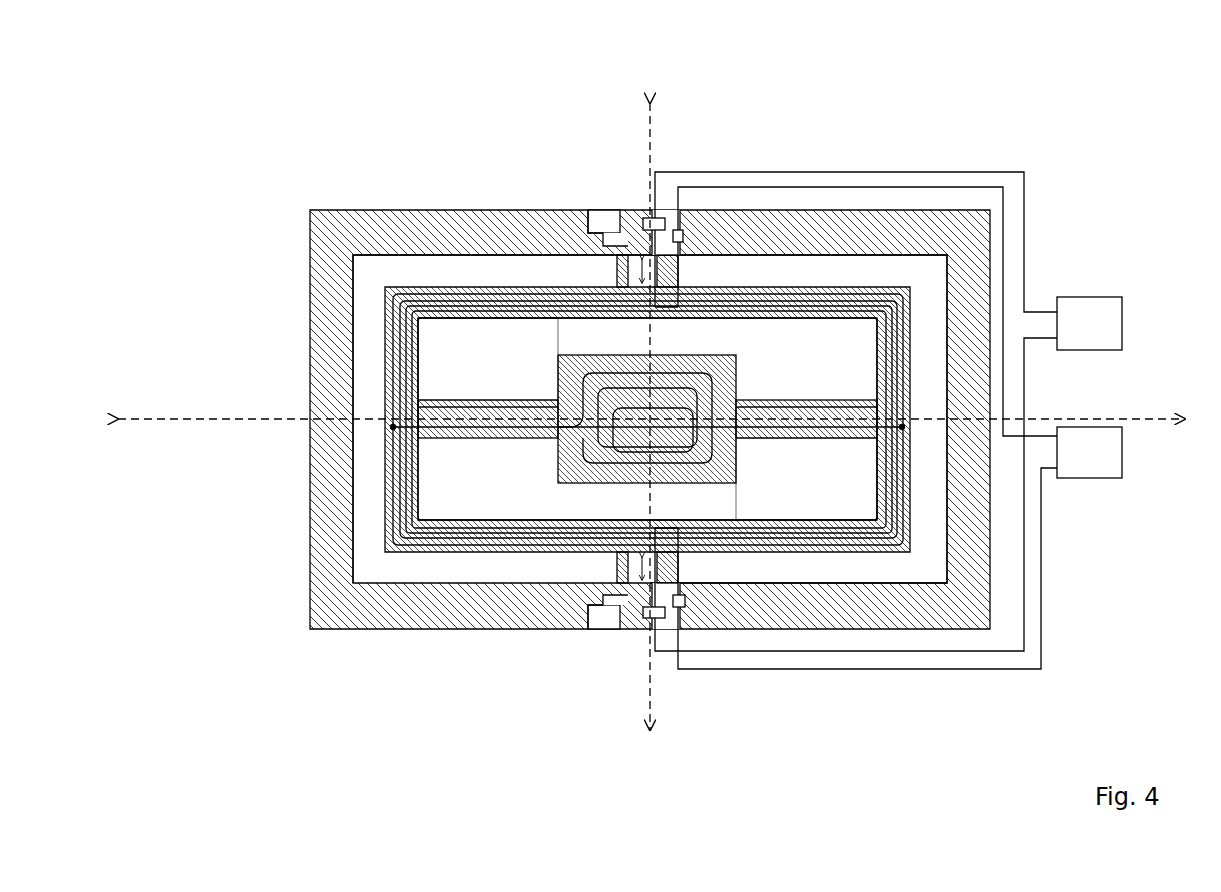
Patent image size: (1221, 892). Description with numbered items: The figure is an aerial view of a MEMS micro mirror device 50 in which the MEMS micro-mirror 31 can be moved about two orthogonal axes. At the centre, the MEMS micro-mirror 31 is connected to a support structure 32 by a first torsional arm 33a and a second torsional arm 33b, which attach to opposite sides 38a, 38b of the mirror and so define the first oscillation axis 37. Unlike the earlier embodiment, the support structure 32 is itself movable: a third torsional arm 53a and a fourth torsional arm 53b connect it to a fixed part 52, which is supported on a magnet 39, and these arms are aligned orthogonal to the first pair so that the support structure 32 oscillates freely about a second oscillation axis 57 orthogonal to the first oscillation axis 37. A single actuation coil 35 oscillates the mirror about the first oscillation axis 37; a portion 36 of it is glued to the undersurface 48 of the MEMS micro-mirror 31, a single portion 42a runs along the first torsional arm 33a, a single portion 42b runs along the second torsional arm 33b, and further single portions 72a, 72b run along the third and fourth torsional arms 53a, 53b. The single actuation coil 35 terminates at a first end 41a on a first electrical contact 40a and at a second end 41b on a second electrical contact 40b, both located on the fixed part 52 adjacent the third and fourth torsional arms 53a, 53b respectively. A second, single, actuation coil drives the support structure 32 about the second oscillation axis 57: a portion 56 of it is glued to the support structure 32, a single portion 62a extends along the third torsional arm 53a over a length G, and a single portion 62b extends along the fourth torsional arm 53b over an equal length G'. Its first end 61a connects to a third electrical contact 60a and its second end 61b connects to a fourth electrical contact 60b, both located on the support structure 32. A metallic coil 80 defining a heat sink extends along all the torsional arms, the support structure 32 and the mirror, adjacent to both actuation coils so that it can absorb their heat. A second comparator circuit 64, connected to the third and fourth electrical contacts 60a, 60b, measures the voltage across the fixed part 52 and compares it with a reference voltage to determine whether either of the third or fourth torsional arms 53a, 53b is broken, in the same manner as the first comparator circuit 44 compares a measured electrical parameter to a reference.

The MEMS micro mirror device 50 is at (585, 366).
The fixed part 52 is at (421, 225).
The magnet 39 is at (438, 347).
The portion of the second, single, actuation coil 56 is at (386, 385).
The support structure 32 is at (386, 540).
The first oscillation axis 37 is at (176, 416).
The second oscillation axis 57 is at (650, 135).
The portion of the single actuation coil 36 is at (653, 423).
The MEMS micro-mirror 31 is at (720, 377).
The undersurface of the MEMS micro mirror 48 is at (560, 455).
The single portion of the single actuation coil 42a is at (487, 400).
The single portion of the single actuation coil 42b is at (808, 398).
The first torsional arm 33a is at (463, 440).
The second torsional arm 33b is at (795, 440).
The metallic coil 80 is at (423, 553).
The side of the MEMS micro-mirror 38a is at (548, 478).
The side of the MEMS micro-mirror 38b is at (770, 520).
The third torsional arm 53a is at (615, 270).
The fourth torsional arm 53b is at (616, 566).
The single portion of the second, single, actuation coil 62a is at (680, 270).
The single portion of the second, single, actuation coil 62b is at (668, 556).
The third electrical contact 60a is at (626, 208).
The fourth electrical contact 60b is at (626, 630).
The first end of the second, single, actuation coil 61a is at (672, 208).
The second end of the second, single, actuation coil 61b is at (672, 630).
The first electrical contact 40a is at (680, 215).
The second electrical contact 40b is at (690, 620).
The first end of the single actuation coil 41a is at (706, 225).
The second end of the single actuation coil 41b is at (707, 610).
The single portion of the single actuation coil 72a is at (856, 246).
The single portion of the single actuation coil 72b is at (856, 555).
The single actuation coil 35 is at (850, 632).
The second comparator circuit 64 is at (1089, 323).
The first comparator circuit 44 is at (1089, 452).
The length of the second, single, actuation coil along the third torsional arm G is at (547, 160).
The length of the second, single, actuation coil along the fourth torsional arm G' is at (569, 681).